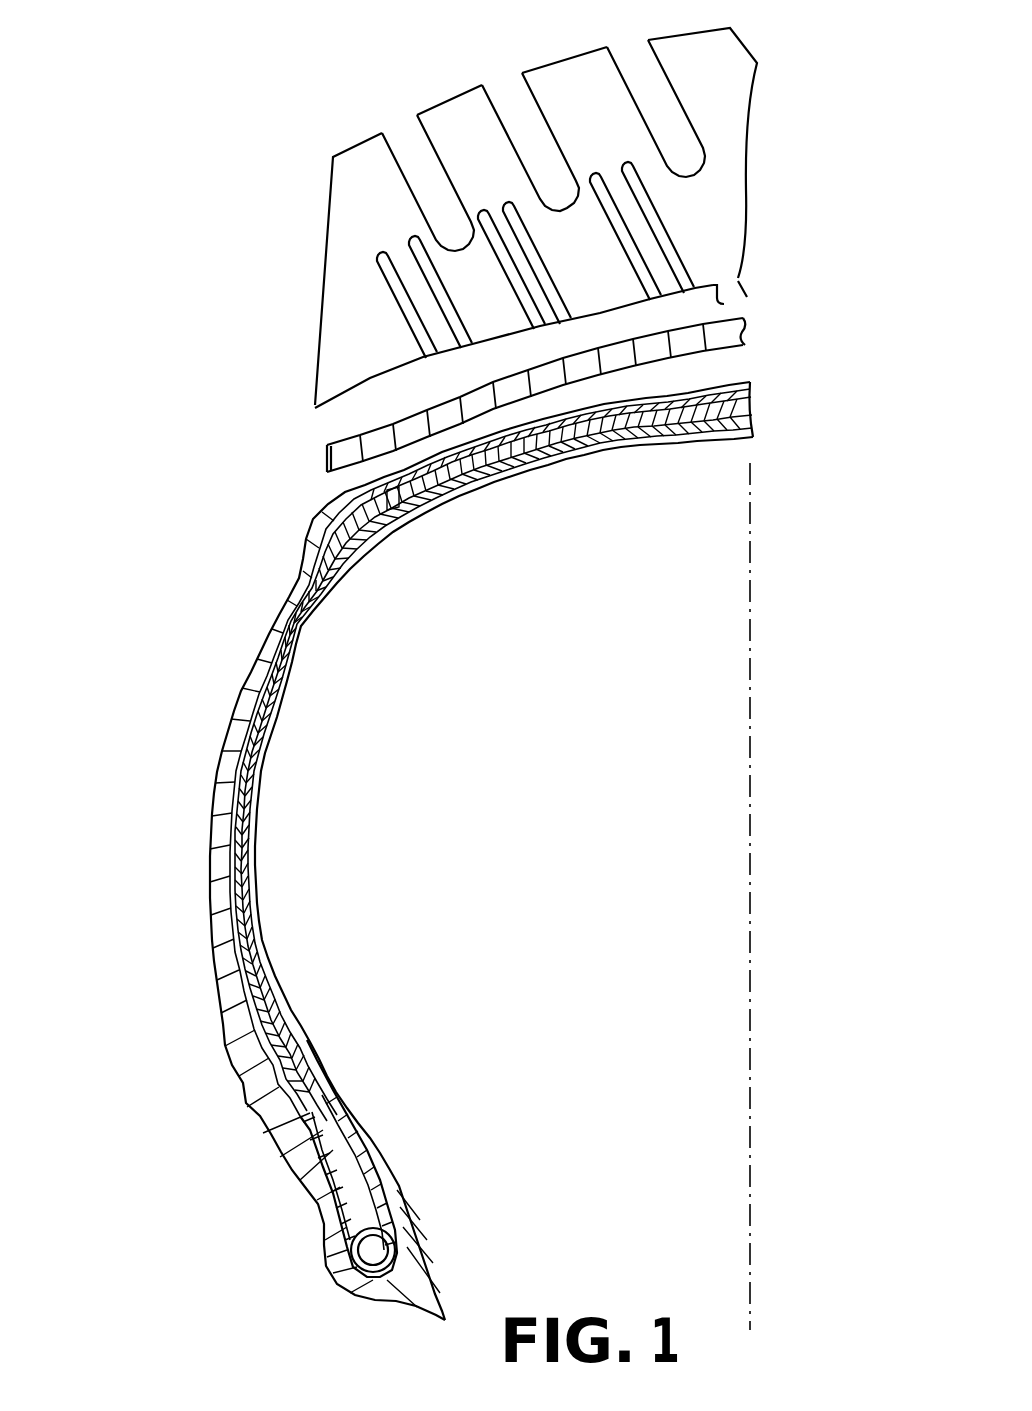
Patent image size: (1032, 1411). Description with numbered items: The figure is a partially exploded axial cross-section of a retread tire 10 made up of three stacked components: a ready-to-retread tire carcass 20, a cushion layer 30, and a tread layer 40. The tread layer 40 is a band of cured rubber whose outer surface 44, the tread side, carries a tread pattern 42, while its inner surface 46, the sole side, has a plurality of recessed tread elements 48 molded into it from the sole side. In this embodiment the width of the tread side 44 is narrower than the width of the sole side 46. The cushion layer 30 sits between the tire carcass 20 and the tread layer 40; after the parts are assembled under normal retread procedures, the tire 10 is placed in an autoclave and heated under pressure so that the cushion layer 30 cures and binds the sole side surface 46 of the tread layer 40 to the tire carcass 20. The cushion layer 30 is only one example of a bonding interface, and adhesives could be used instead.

The retread tire 10 is at (113, 416).
The tire carcass 20 is at (243, 690).
The cushion layer 30 is at (323, 447).
The tread layer 40 is at (300, 278).
The tread pattern 42 is at (522, 127).
The outer surface 44 is at (357, 143).
The inner surface 46 is at (724, 304).
The recessed tread elements 48 is at (653, 203).